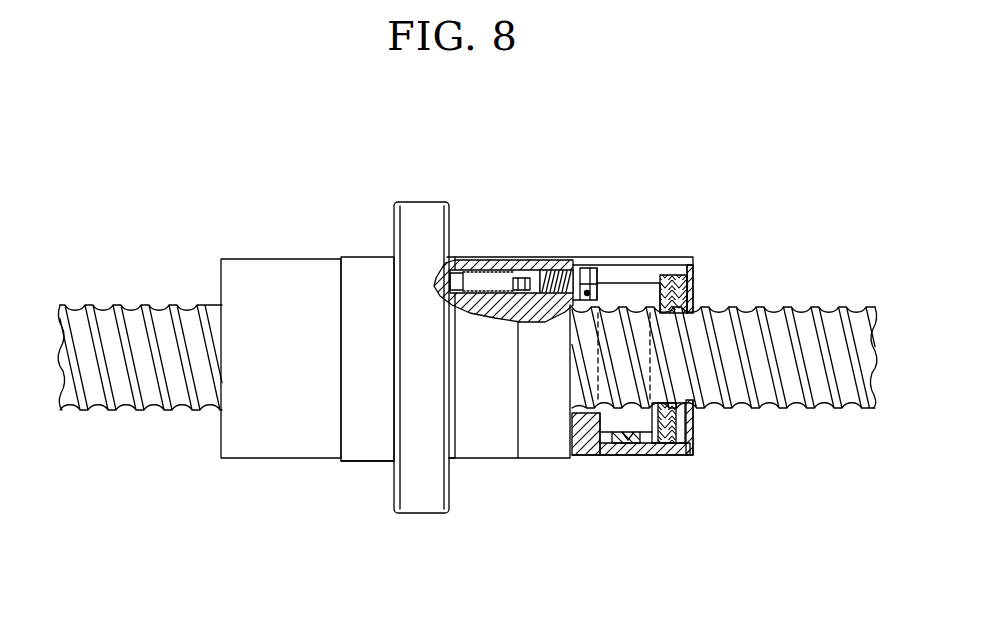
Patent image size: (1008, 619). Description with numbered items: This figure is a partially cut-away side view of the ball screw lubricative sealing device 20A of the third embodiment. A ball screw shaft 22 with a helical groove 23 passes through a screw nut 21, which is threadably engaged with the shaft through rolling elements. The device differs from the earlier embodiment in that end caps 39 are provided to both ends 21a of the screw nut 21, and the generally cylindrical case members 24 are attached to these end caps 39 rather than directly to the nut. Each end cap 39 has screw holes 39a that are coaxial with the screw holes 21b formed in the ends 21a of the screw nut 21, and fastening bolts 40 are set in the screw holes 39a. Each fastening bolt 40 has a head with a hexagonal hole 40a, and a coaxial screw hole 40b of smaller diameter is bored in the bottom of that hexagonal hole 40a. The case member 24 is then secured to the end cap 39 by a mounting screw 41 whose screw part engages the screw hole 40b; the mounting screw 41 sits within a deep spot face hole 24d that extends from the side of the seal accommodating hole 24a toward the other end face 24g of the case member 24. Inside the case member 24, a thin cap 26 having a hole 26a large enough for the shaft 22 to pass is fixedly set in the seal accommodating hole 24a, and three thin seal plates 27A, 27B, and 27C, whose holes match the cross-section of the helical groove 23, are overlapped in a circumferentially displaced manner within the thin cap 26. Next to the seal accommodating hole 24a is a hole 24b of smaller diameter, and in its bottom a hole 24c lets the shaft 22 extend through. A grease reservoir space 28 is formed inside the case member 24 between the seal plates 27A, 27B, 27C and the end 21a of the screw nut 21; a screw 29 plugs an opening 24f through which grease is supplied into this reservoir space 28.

The ball screw lubricative sealing device 20A is at (312, 143).
The screw nut 21 is at (477, 443).
The end of the screw nut 21a is at (392, 447).
The screw hole 21b is at (455, 258).
The ball screw shaft 22 is at (90, 303).
The helical groove 23 is at (835, 337).
The case member 24 is at (247, 270).
The seal accommodating hole 24a is at (700, 428).
The hole with a smaller diameter 24b is at (667, 453).
The hole 24c is at (595, 455).
The deep spot face hole 24d is at (643, 257).
The opening 24f is at (627, 450).
The other end face 24g is at (575, 463).
The thin cap 26 is at (690, 273).
The hole 26a is at (692, 420).
The thin seal plate 27A is at (655, 257).
The thin seal plate 27B is at (670, 257).
The thin seal plate 27C is at (693, 257).
The grease reservoir space 28 is at (627, 257).
The screw 29 is at (643, 460).
The end cap 39 is at (355, 290).
The screw hole 39a is at (520, 257).
The fastening bolt 40 is at (485, 253).
The hexagonal hole 40a is at (573, 257).
The screw hole 40b is at (543, 257).
The mounting screw 41 is at (589, 291).